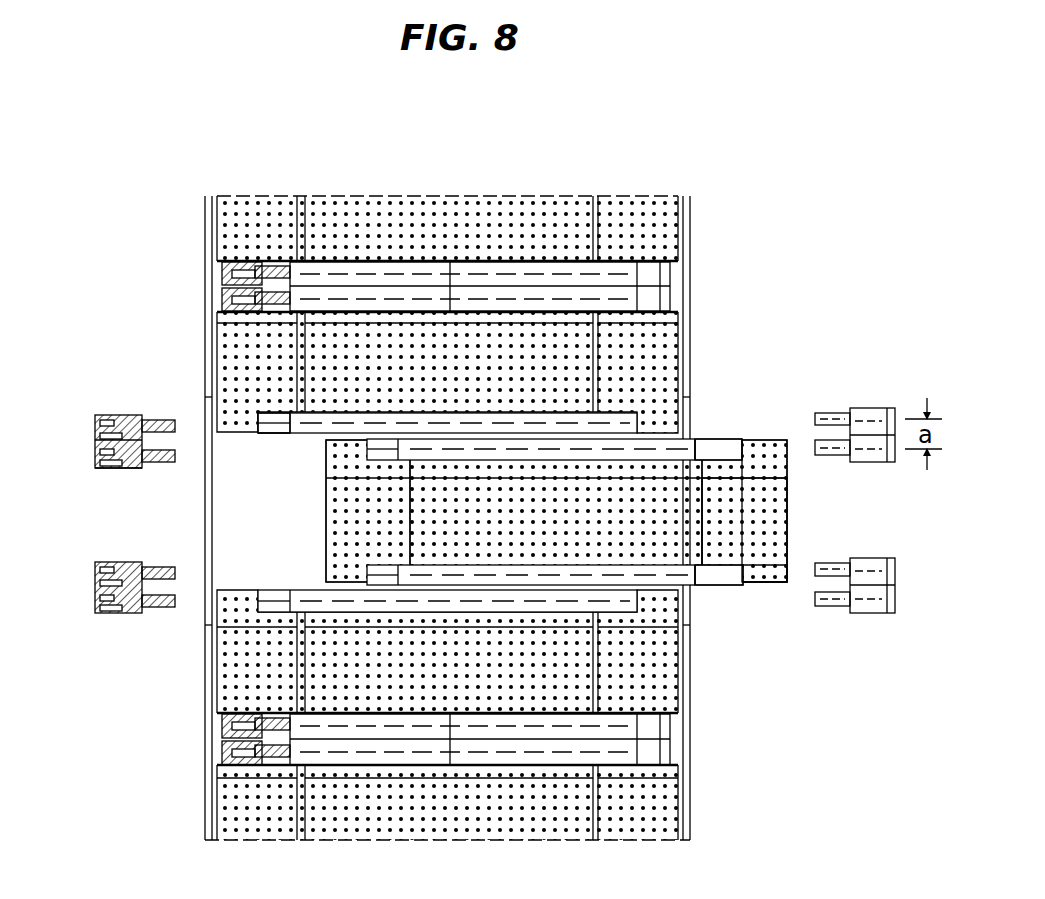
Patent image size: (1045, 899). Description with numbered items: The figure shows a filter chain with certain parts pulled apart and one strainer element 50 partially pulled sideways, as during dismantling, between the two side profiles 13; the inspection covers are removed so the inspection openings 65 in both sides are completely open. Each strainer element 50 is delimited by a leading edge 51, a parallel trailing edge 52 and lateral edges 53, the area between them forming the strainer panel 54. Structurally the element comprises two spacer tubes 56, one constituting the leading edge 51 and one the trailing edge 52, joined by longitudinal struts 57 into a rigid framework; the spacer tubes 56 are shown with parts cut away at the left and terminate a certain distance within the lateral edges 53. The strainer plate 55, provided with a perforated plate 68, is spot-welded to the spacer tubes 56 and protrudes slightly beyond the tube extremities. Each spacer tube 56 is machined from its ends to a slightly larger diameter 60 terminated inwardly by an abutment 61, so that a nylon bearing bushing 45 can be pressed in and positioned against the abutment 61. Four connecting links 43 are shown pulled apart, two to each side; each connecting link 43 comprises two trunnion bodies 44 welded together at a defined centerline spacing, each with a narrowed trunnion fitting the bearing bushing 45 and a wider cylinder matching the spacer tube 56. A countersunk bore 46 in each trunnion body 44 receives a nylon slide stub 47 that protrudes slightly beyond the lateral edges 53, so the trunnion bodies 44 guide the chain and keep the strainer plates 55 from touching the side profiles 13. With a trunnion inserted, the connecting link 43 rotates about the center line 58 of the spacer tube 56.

The side profile 13 is at (207, 312).
The connecting link 43 is at (858, 400).
The trunnion body 44 is at (118, 415).
The bearing bushing 45 is at (232, 412).
The countersunk bore 46 is at (95, 465).
The slide stub 47 is at (95, 448).
The strainer element 50 is at (787, 438).
The leading edge 51 is at (745, 440).
The trailing edge 52 is at (740, 590).
The lateral edge 53 is at (326, 495).
The strainer panel 54 is at (346, 524).
The strainer plate 55 is at (785, 495).
The spacer tube 56 is at (712, 440).
The longitudinal strut 57 is at (702, 527).
The center line 58 is at (700, 438).
The widened diameter 60 is at (262, 435).
The abutment 61 is at (275, 437).
The inspection opening 65 is at (207, 526).
The perforated plate 68 is at (765, 578).